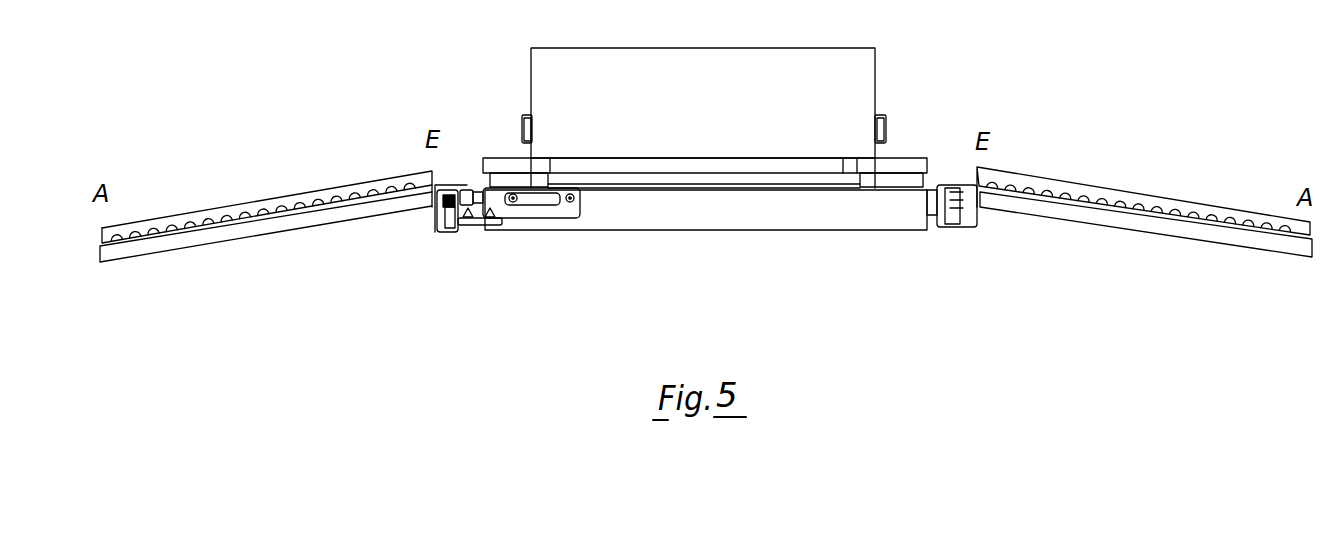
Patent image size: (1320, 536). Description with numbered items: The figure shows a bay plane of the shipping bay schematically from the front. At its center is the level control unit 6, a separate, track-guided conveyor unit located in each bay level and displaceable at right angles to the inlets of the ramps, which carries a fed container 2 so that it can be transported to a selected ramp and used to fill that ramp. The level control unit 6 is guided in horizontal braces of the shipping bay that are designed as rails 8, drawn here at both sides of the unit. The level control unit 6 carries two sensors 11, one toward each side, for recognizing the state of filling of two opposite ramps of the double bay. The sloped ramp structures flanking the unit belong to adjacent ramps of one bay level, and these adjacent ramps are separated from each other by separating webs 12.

The container 2 is at (860, 63).
The level control unit 6 is at (649, 218).
The rail 8 is at (442, 232).
The sensor 11 is at (252, 215).
The separating web 12 is at (299, 198).